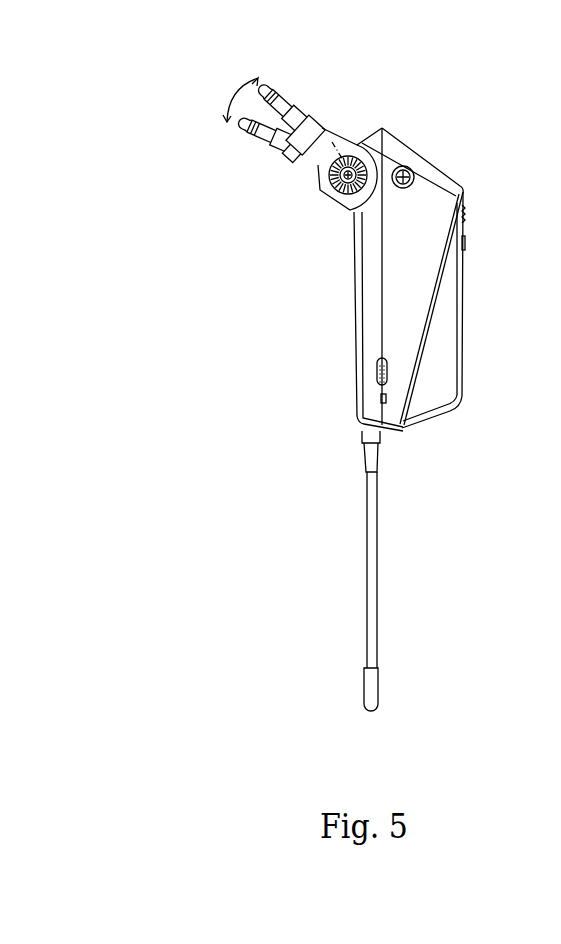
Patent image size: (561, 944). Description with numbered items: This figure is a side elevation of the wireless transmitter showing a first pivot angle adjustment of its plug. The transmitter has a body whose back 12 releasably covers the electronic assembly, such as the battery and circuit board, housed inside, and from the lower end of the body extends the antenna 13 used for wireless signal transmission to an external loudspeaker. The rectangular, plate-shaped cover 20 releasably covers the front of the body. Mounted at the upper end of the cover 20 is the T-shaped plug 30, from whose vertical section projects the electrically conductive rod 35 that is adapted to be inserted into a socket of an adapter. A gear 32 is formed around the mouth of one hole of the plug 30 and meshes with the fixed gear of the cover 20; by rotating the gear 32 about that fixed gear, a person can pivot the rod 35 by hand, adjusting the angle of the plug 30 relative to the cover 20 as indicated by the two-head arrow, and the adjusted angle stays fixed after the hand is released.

The back 12 is at (432, 183).
The antenna 13 is at (370, 563).
The cover 20 is at (367, 318).
The plug 30 is at (338, 133).
The gear 32 is at (345, 207).
The electrically conductive rod 35 is at (290, 104).